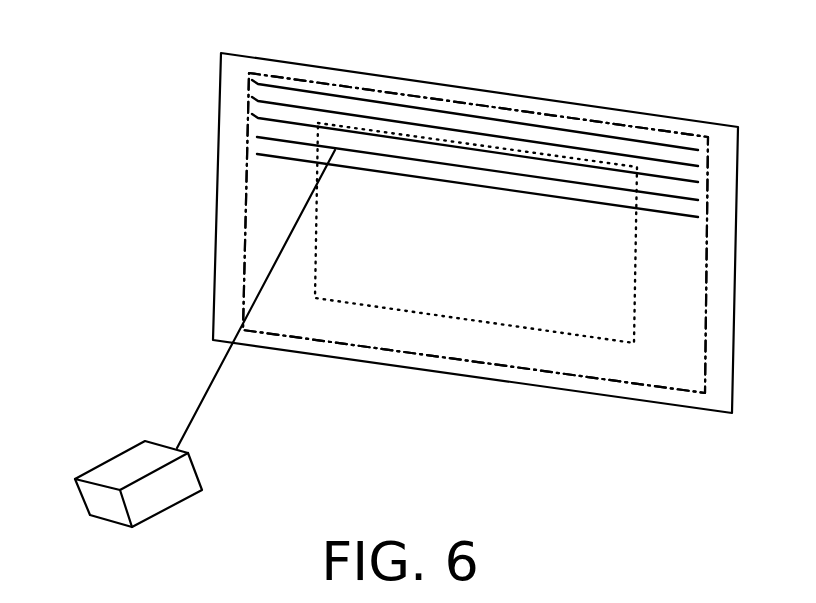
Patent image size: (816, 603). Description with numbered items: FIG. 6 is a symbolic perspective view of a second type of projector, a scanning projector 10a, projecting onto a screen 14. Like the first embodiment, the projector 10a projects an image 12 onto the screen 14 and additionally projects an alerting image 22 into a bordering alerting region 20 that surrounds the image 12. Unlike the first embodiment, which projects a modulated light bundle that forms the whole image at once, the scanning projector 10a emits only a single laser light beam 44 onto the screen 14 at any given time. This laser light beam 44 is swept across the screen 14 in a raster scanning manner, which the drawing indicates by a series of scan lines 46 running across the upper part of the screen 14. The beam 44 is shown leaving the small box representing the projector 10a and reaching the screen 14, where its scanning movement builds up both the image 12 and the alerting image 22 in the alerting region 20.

The screen 14 is at (238, 53).
The alerting region 20 is at (648, 387).
The alerting image 22 is at (267, 207).
The image 12 is at (452, 262).
The scan lines 46 is at (252, 80).
The laser light beam 44 is at (210, 392).
The projector 10a is at (123, 467).